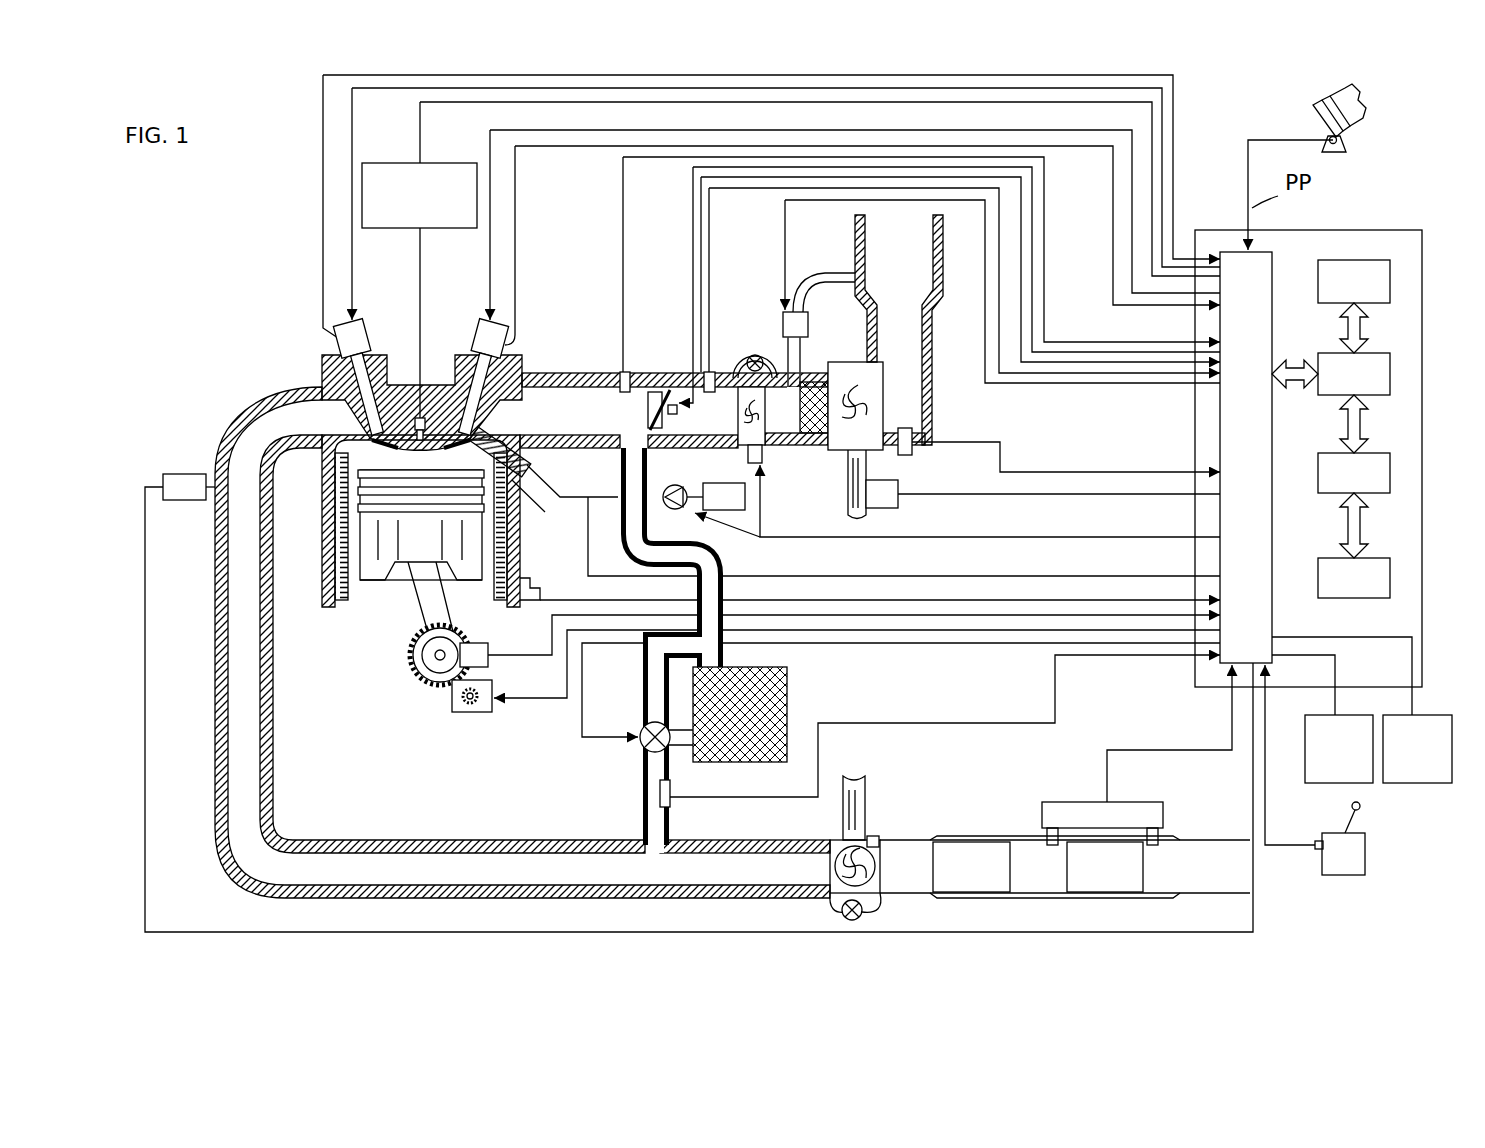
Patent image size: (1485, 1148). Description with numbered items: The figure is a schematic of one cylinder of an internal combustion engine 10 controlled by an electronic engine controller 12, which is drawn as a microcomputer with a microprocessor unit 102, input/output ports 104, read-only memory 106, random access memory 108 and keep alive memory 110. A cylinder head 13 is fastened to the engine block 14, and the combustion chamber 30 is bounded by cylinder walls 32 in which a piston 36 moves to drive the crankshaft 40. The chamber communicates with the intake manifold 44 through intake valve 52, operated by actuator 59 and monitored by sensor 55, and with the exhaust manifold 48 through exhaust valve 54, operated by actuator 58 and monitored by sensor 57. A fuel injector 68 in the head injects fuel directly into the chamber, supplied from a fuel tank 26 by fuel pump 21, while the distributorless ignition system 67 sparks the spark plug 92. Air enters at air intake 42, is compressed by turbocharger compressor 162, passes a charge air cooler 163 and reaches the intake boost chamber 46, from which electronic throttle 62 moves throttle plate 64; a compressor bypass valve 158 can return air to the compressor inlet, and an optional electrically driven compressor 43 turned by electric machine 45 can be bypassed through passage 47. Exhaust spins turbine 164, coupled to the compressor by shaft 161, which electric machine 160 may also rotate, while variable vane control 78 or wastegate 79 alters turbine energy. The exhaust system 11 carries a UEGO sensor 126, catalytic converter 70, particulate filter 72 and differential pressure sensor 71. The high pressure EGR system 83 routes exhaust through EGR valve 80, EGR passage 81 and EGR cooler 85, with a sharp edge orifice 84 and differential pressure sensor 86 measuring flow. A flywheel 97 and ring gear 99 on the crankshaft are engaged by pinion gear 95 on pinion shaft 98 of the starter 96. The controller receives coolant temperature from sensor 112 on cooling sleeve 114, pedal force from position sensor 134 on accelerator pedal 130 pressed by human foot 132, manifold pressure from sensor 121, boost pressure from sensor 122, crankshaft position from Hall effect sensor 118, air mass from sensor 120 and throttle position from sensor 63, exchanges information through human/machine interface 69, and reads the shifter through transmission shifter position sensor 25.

The internal combustion engine 10 is at (255, 307).
The exhaust system 11 is at (208, 425).
The electronic engine controller 12 is at (1385, 230).
The cylinder head 13 is at (520, 375).
The engine block 14 is at (322, 474).
The fuel pump 21 is at (683, 487).
The transmission shifter position sensor 25 is at (1316, 850).
The fuel tank 26 is at (1034, 679).
The combustion chamber 30 is at (405, 480).
The cylinder walls 32 is at (390, 595).
The piston 36 is at (395, 562).
The crankshaft 40 is at (418, 672).
The air intake 42 is at (899, 330).
The electrically driven compressor 43 is at (762, 450).
The intake manifold 44 is at (722, 410).
The electric machine 45 is at (762, 460).
The intake boost chamber 46 is at (732, 416).
The passage 47 is at (752, 360).
The exhaust manifold 48 is at (291, 418).
The intake valve 52 is at (462, 425).
The exhaust valve 54 is at (372, 438).
The sensor 55 is at (500, 345).
The sensor 57 is at (340, 345).
The variable valve activating/deactivating actuator 58 is at (368, 345).
The variable valve activating/deactivating actuator 59 is at (480, 345).
The electronic throttle 62 is at (652, 390).
The throttle position sensor 63 is at (665, 482).
The throttle plate 64 is at (662, 390).
The distributorless ignition system 67 is at (370, 163).
The fuel injector 68 is at (520, 478).
The human/machine interface 69 is at (1339, 749).
The catalytic converter 70 is at (971, 867).
The particulate filter differential pressure sensor 71 is at (1150, 802).
The particulate filter 72 is at (1105, 867).
The variable vane control 78 is at (879, 838).
The wastegate 79 is at (864, 910).
The EGR valve 80 is at (645, 727).
The EGR passage 81 is at (622, 485).
The high pressure EGR system 83 is at (600, 762).
The sharp edge orifice 84 is at (647, 800).
The EGR cooler 85 is at (787, 700).
The EGR differential pressure sensor 86 is at (670, 805).
The spark plug 92 is at (412, 418).
The pinion gear 95 is at (472, 704).
The starter 96 is at (484, 712).
The flywheel 97 is at (410, 660).
The pinion shaft 98 is at (464, 705).
The ring gear 99 is at (430, 688).
The microprocessor unit 102 is at (1390, 368).
The input/output ports 104 is at (1272, 262).
The read-only memory 106 is at (1390, 275).
The random access memory 108 is at (1390, 468).
The keep alive memory 110 is at (1390, 572).
The temperature sensor 112 is at (535, 588).
The cooling sleeve 114 is at (335, 518).
The Hall effect sensor 118 is at (485, 643).
The mass air flow sensor 120 is at (910, 450).
The pressure sensor 121 is at (622, 372).
The pressure sensor 122 is at (712, 370).
The UEGO sensor 126 is at (163, 480).
The accelerator pedal 130 is at (1318, 112).
The human foot 132 is at (1365, 104).
The position sensor 134 is at (1348, 150).
The compressor bypass valve 158 is at (793, 310).
The electric machine 160 is at (898, 500).
The shaft 161 is at (848, 512).
The turbocharger compressor 162 is at (886, 372).
The charge air cooler 163 is at (818, 382).
The turbine 164 is at (830, 858).